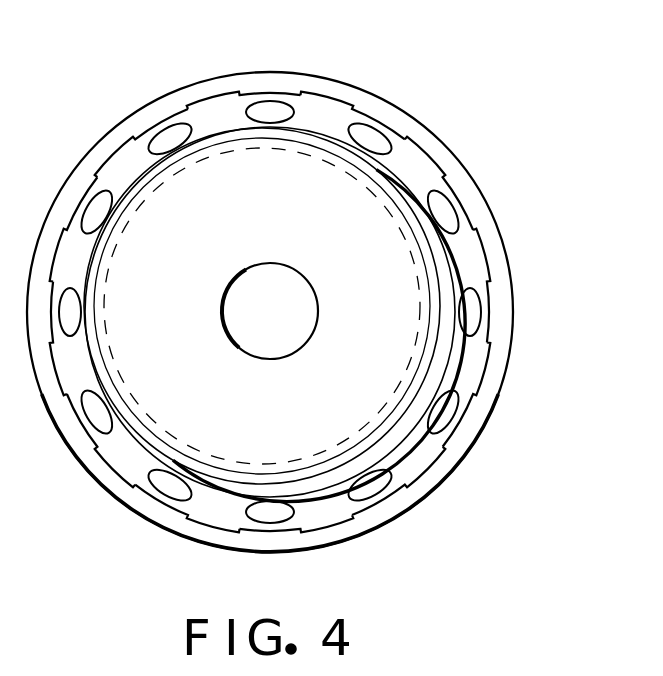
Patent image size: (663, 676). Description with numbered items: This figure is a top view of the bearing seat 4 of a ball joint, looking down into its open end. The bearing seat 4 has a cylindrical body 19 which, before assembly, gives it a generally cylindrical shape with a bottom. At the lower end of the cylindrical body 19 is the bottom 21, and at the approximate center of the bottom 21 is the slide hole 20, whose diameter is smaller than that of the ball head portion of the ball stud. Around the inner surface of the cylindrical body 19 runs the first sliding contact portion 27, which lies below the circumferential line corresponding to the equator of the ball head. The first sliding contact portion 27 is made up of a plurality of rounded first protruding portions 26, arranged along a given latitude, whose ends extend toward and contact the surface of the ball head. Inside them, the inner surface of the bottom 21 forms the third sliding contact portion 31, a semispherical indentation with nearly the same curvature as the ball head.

The bearing seat 4 is at (472, 143).
The cylindrical body 19 is at (507, 297).
The slide hole 20 is at (272, 266).
The bottom 21 is at (380, 270).
The first protruding portions 26 is at (162, 140).
The first sliding contact portion 27 is at (318, 117).
The third sliding contact portion 31 is at (403, 353).